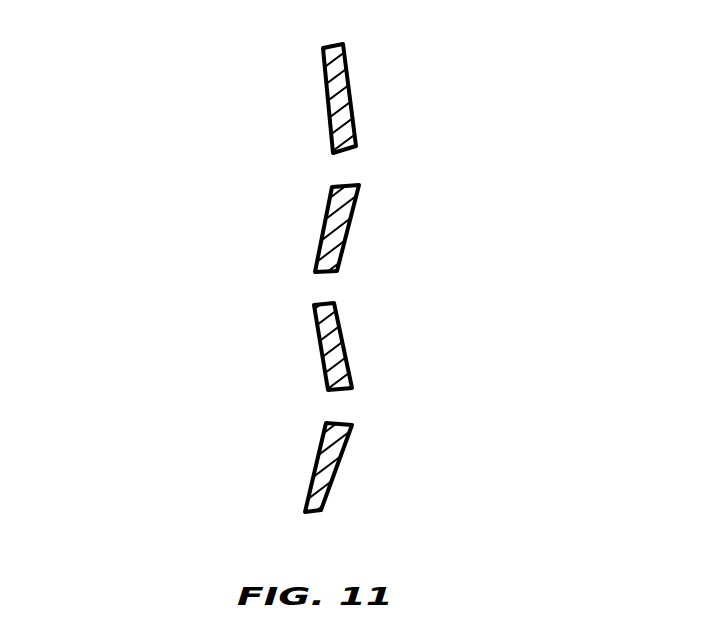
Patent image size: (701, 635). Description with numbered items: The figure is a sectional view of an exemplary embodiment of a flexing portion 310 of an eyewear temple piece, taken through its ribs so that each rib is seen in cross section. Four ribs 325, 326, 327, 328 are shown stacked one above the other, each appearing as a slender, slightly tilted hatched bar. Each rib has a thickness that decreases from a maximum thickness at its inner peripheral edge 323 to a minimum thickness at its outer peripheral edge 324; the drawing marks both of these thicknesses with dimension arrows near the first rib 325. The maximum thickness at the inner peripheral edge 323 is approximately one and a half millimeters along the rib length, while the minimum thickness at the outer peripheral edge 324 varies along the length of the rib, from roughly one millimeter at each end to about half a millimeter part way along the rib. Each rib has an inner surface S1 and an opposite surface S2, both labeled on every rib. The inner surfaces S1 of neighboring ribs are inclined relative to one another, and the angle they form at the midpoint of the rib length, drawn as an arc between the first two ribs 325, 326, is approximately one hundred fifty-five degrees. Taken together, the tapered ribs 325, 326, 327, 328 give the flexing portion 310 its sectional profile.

The slat assembly 310 is at (160, 97).
The inner peripheral edge 323 is at (349, 155).
The outer peripheral edge 324 is at (328, 44).
The rib 325 is at (330, 118).
The rib 326 is at (322, 255).
The rib 327 is at (320, 342).
The rib 328 is at (311, 488).
The inner surface S1 is at (325, 78).
The second surface S2 is at (325, 208).